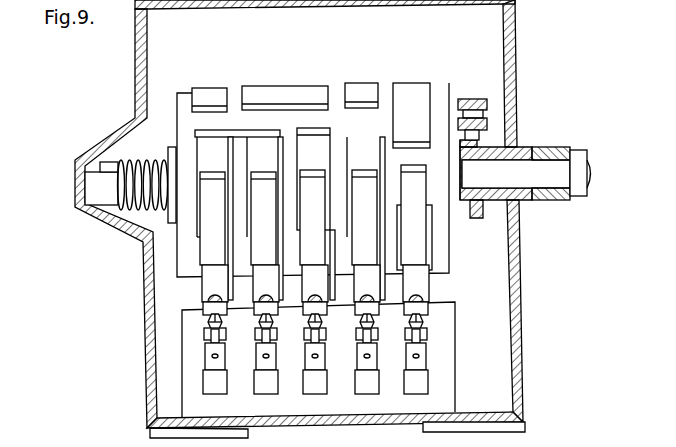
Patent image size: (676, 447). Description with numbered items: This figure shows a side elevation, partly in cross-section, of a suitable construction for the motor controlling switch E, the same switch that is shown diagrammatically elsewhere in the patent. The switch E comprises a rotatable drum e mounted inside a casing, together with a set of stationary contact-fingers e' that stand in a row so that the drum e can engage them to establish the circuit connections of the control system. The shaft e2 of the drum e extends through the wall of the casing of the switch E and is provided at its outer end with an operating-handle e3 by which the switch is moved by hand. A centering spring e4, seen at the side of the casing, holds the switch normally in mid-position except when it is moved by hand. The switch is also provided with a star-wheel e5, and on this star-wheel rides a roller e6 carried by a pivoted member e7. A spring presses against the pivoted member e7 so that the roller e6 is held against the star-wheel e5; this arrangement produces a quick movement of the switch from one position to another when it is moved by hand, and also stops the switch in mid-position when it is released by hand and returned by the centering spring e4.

The motor controlling switch E is at (300, 219).
The rotatable drum e is at (313, 175).
The stationary contact-fingers e' is at (314, 279).
The shaft e2 is at (514, 167).
The operating-handle e3 is at (562, 144).
The centering spring e4 is at (143, 214).
The star-wheel e5 is at (477, 212).
The roller e6 is at (470, 97).
The pivoted member e7 is at (458, 96).